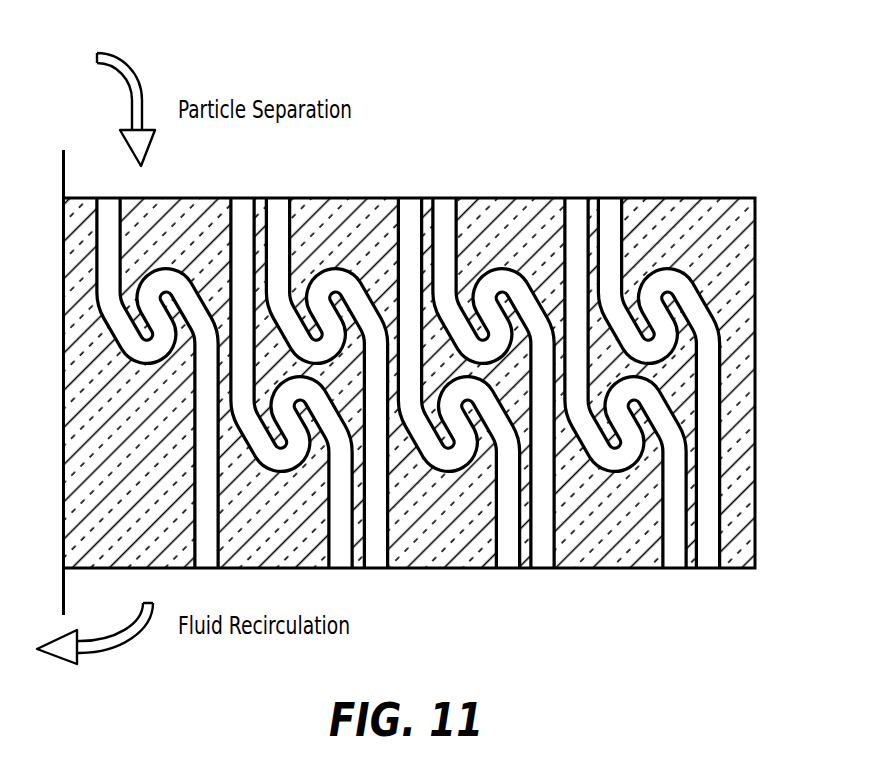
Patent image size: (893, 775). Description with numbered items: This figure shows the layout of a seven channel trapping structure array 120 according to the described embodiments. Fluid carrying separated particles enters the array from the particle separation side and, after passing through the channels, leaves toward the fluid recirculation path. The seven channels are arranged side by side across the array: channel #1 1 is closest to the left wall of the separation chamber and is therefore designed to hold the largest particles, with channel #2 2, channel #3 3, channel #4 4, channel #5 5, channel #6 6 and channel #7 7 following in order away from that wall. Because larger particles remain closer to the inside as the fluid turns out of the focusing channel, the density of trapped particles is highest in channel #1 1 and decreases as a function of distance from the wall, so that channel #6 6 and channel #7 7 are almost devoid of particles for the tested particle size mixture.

The trapping structure array 120 is at (420, 352).
The channel # 1 is at (157, 383).
The channel # 2 is at (291, 383).
The channel # 3 is at (327, 383).
The channel # 4 is at (459, 383).
The channel # 5 is at (494, 383).
The channel # 6 is at (626, 383).
The channel # 7 is at (659, 383).